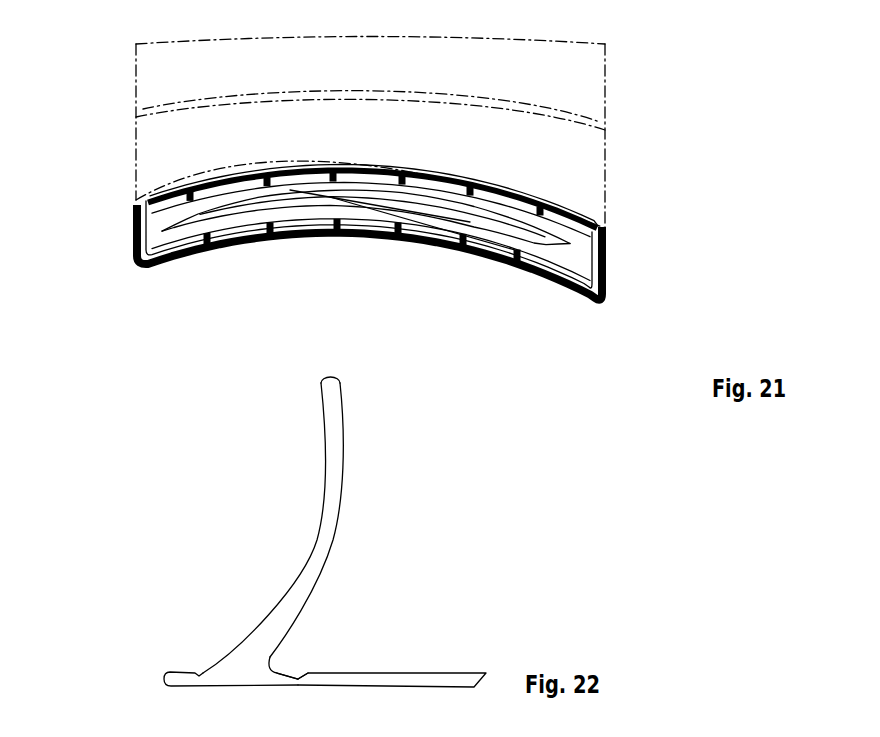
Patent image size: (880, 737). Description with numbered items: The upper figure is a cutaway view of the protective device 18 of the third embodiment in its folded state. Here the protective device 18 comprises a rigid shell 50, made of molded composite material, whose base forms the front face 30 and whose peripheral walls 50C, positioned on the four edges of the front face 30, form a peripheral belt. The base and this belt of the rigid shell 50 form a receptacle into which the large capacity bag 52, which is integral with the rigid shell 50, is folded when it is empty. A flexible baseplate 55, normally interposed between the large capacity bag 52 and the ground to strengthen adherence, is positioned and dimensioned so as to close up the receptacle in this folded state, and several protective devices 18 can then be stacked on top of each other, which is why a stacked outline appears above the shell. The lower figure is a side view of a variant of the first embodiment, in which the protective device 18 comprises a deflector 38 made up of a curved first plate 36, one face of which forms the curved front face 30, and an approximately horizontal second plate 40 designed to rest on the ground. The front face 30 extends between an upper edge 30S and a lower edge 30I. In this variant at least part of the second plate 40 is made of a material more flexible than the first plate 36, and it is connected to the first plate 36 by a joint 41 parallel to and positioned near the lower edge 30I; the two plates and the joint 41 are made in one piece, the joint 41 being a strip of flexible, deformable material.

In FIG. 21, the protective device 18 is at (628, 92).
In FIG. 21, the front face 30 is at (354, 239).
In FIG. 22, the front face 30 is at (308, 514).
In FIG. 22, the upper edge 30S is at (321, 384).
In FIG. 22, the lower edge 30I is at (167, 684).
In FIG. 22, the first plate 36 is at (335, 450).
In FIG. 22, the deflector 38 is at (320, 458).
In FIG. 22, the second plate 40 is at (450, 672).
In FIG. 22, the joint 41 is at (298, 675).
In FIG. 21, the rigid shell 50 is at (312, 241).
In FIG. 21, the peripheral walls 50C is at (133, 240).
In FIG. 21, the large capacity bag 52 is at (518, 263).
In FIG. 21, the baseplate 55 is at (566, 212).